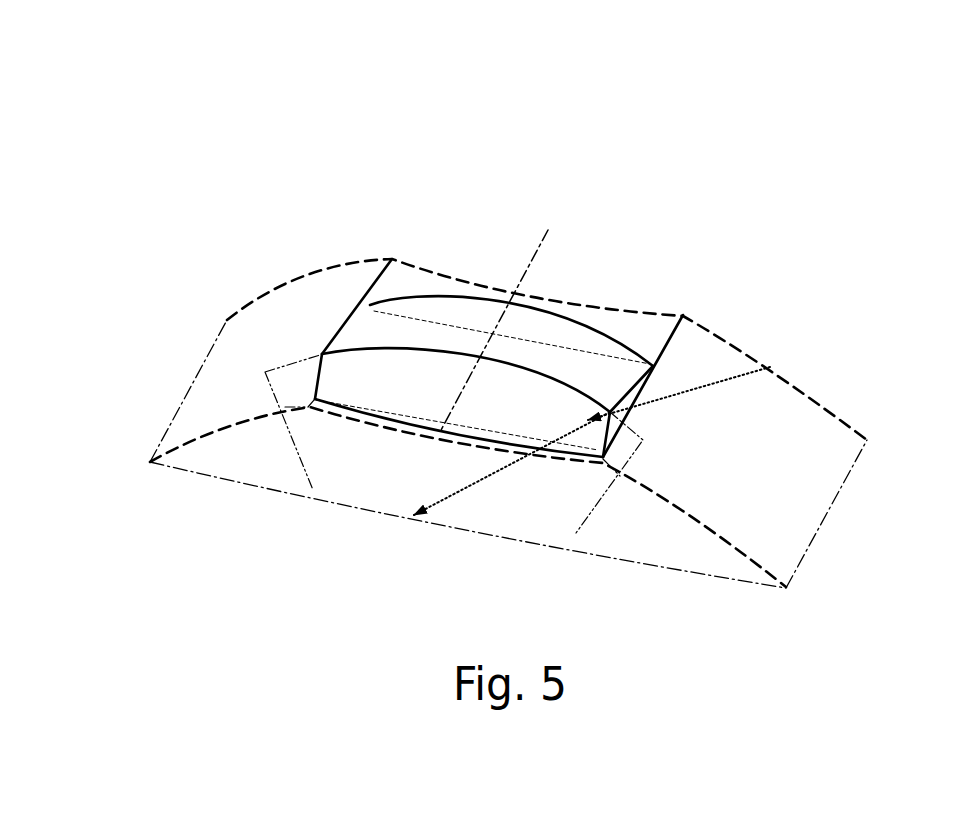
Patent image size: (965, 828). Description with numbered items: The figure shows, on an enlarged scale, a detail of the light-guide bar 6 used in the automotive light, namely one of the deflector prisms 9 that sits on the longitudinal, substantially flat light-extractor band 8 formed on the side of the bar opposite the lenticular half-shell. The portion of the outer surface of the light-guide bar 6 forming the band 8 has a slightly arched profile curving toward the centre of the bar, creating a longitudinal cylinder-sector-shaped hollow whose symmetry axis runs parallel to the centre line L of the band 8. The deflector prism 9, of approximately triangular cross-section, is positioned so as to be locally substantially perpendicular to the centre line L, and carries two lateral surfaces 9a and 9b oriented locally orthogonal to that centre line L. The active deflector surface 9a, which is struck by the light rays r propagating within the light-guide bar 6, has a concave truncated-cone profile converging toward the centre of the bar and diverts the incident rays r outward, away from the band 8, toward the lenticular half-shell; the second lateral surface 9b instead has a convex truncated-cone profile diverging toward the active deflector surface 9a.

The light-guide bar 6 is at (250, 333).
The longitudinal light-extractor band 8 is at (656, 337).
The deflector prism 9 is at (479, 360).
The active deflector surface 9a is at (418, 388).
The second lateral surface 9b is at (485, 310).
The centre line L is at (508, 325).
The light rays r is at (592, 434).